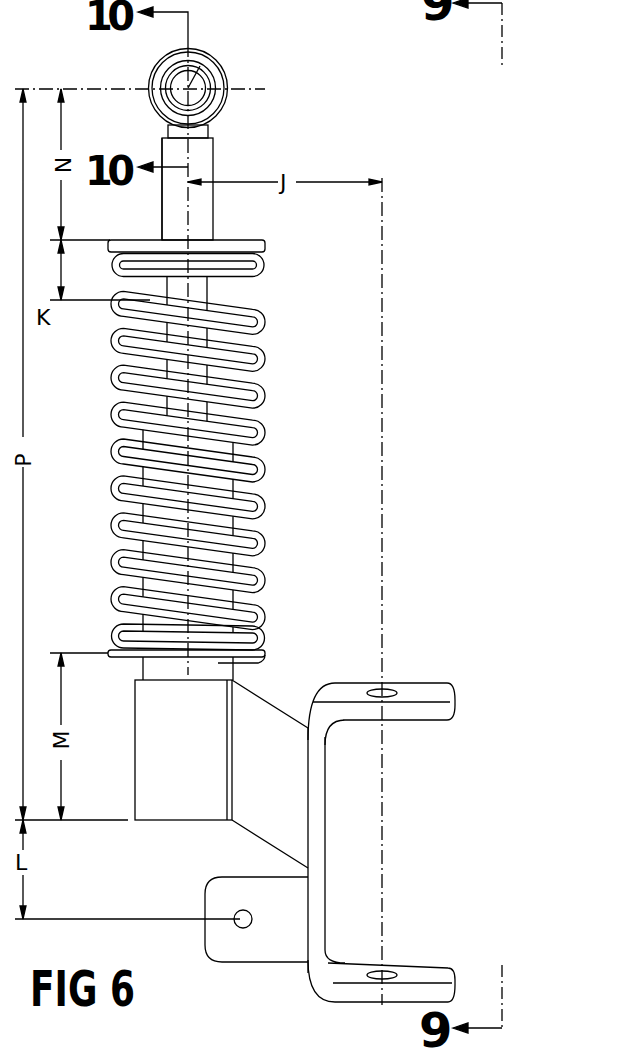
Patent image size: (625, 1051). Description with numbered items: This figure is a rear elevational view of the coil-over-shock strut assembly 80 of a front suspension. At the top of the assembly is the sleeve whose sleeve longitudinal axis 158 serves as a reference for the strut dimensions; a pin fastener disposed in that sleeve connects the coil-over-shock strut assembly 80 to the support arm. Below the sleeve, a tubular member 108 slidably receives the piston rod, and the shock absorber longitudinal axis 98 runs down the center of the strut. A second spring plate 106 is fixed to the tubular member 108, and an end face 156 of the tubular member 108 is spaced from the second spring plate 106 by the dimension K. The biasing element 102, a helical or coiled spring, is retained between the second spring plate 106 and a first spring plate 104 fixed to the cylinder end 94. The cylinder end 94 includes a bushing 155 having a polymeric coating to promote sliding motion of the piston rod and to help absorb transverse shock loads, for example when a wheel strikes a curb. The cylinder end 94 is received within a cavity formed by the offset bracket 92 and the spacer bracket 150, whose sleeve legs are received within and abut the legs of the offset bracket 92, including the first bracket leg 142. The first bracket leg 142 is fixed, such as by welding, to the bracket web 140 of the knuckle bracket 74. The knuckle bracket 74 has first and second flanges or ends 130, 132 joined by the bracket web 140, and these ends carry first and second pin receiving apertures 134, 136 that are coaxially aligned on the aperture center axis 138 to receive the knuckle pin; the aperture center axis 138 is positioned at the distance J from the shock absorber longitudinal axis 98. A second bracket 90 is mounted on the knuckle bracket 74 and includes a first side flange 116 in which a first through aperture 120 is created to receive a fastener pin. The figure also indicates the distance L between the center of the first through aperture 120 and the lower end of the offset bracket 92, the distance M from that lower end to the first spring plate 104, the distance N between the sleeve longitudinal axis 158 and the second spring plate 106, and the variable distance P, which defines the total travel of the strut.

The knuckle bracket 74 is at (368, 854).
The coil-over-shock strut assembly 80 is at (296, 140).
The second bracket 90 is at (223, 938).
The offset bracket 92 is at (172, 802).
The cylinder end 94 is at (240, 662).
The shock absorber longitudinal axis 98 is at (198, 213).
The biasing element 102 is at (191, 452).
The first spring plate 104 is at (115, 651).
The second spring plate 106 is at (263, 246).
The tubular member 108 is at (177, 203).
The first side flange 116 is at (222, 896).
The first through aperture 120 is at (243, 928).
The first flange or end 130 is at (410, 712).
The second flange or end 132 is at (400, 975).
The first pin receiving aperture 134 is at (380, 690).
The second pin receiving aperture 136 is at (378, 972).
The aperture center axis 138 is at (382, 437).
The bracket web 140 is at (316, 793).
The first bracket leg 142 is at (240, 712).
The spacer bracket 150 is at (235, 1046).
The bushing 155 is at (113, 432).
The end face 156 is at (226, 299).
The sleeve longitudinal axis 158 is at (207, 56).